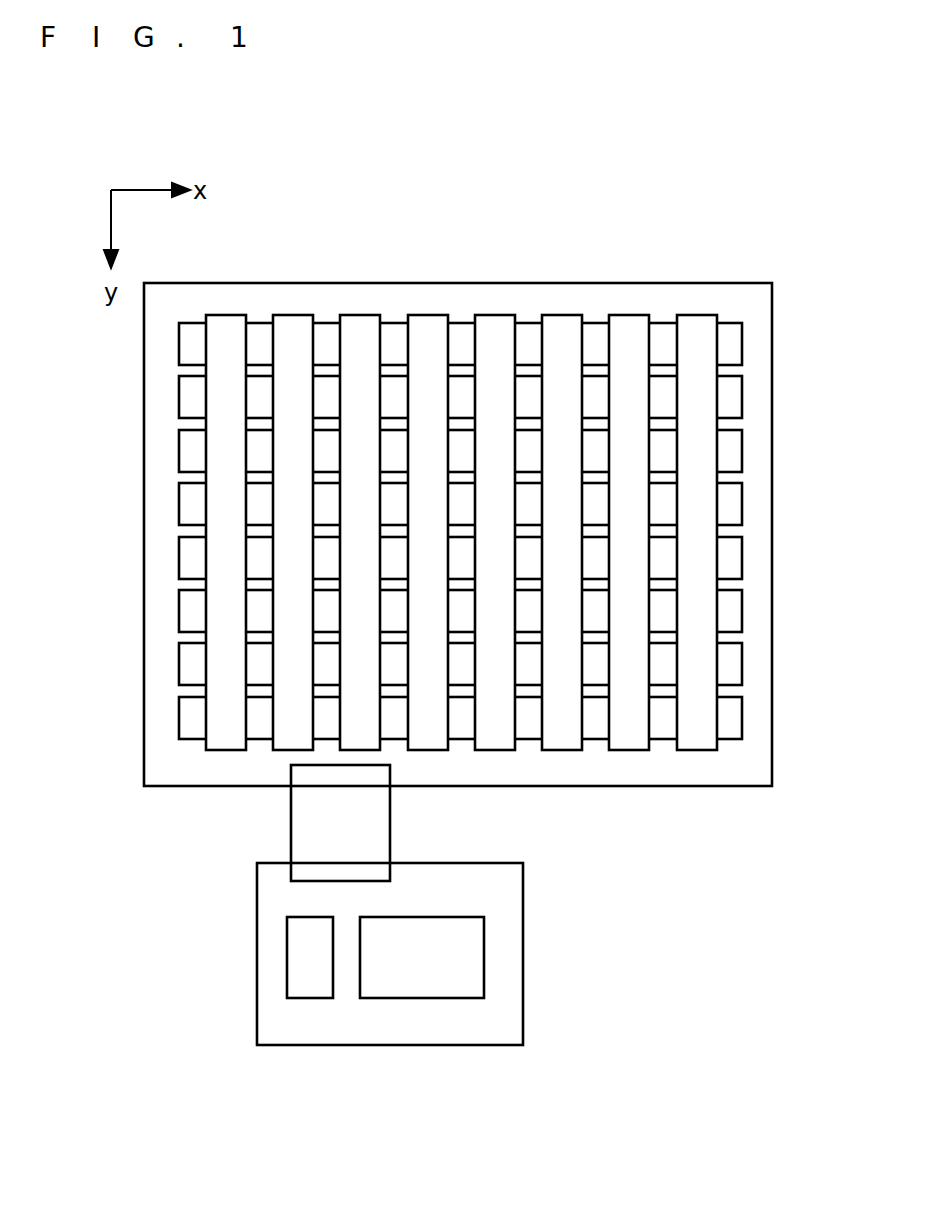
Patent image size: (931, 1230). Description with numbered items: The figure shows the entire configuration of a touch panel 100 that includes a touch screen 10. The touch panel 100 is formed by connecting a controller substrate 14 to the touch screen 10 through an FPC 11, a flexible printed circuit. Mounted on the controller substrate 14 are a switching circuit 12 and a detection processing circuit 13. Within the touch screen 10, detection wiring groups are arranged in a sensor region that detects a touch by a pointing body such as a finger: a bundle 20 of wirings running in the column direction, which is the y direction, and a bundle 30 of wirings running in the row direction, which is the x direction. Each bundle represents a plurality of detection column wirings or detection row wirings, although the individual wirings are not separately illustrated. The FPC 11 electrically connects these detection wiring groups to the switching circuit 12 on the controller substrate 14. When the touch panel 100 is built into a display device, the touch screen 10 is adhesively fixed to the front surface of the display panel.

The touch panel 100 is at (393, 246).
The touch screen 10 is at (519, 282).
The bundle of wirings in a column direction 20 is at (225, 750).
The bundle of wirings in a row direction 30 is at (179, 714).
The FPC 11 is at (390, 822).
The switching circuit 12 is at (287, 957).
The detection processing circuit 13 is at (484, 960).
The controller substrate 14 is at (523, 891).